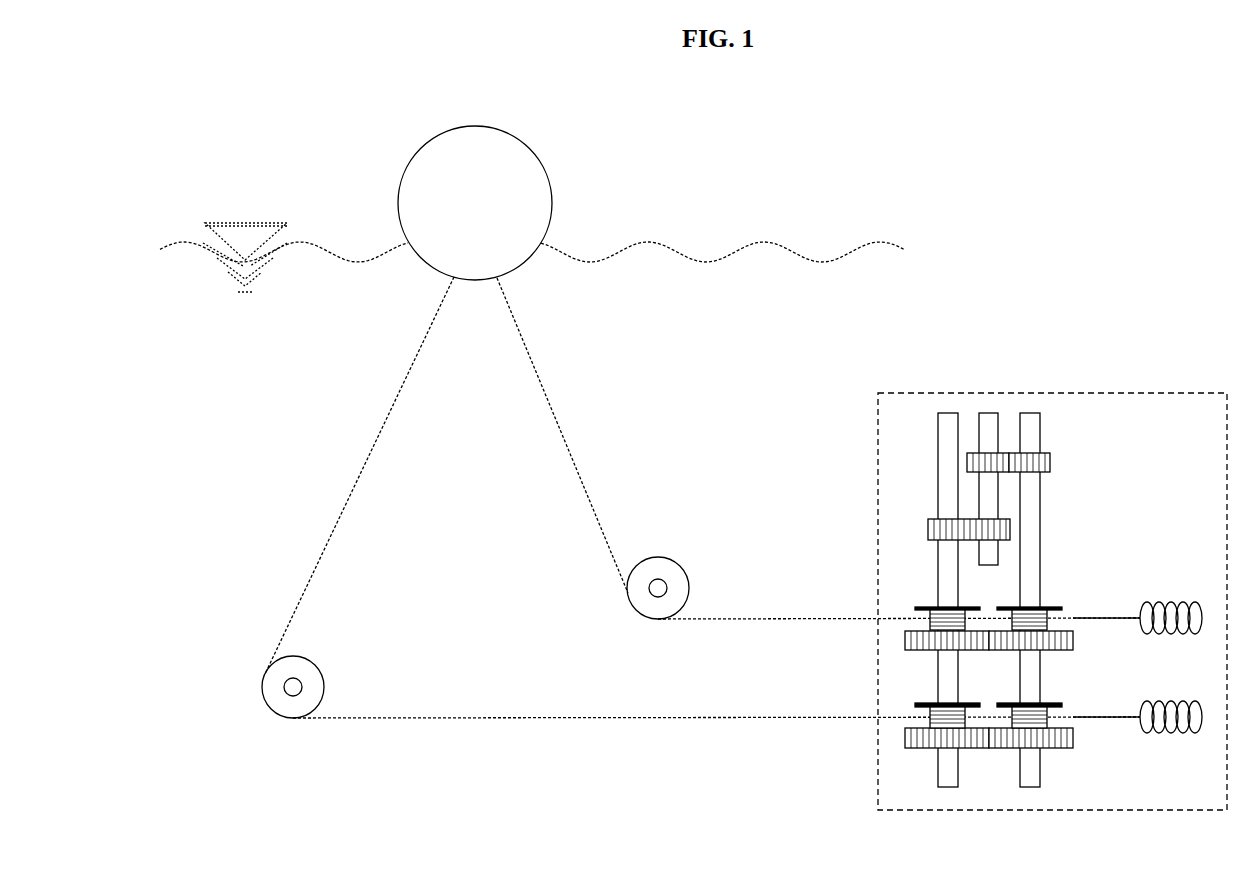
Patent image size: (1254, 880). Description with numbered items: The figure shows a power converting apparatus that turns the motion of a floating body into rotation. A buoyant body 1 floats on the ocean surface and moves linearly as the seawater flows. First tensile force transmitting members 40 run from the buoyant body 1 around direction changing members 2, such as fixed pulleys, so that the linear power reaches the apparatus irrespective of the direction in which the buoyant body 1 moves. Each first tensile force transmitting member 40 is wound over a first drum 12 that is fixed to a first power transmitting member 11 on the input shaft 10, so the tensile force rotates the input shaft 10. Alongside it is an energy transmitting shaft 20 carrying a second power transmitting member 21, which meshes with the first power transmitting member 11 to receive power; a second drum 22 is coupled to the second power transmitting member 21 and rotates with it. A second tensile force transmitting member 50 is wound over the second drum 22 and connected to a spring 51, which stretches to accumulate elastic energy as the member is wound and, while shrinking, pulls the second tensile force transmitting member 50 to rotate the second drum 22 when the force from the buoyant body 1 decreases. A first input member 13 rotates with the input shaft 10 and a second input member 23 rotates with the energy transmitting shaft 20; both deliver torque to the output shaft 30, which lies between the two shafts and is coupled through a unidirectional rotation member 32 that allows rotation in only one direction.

The buoyant body 1 is at (474, 132).
The direction changing member 2 is at (672, 565).
The input shaft 10 is at (945, 790).
The first power transmitting member 11 is at (905, 638).
The first drum 12 is at (920, 607).
The first input member 13 is at (928, 530).
The energy transmitting shaft 20 is at (1030, 790).
The second power transmitting member 21 is at (1062, 652).
The second drum 22 is at (1047, 607).
The second input member 23 is at (1053, 463).
The output shaft 30 is at (978, 418).
The unidirectional rotation member 32 is at (967, 462).
The first tensile force transmitting member 40 is at (560, 421).
The second tensile force transmitting member 50 is at (1103, 617).
The spring 51 is at (1173, 602).